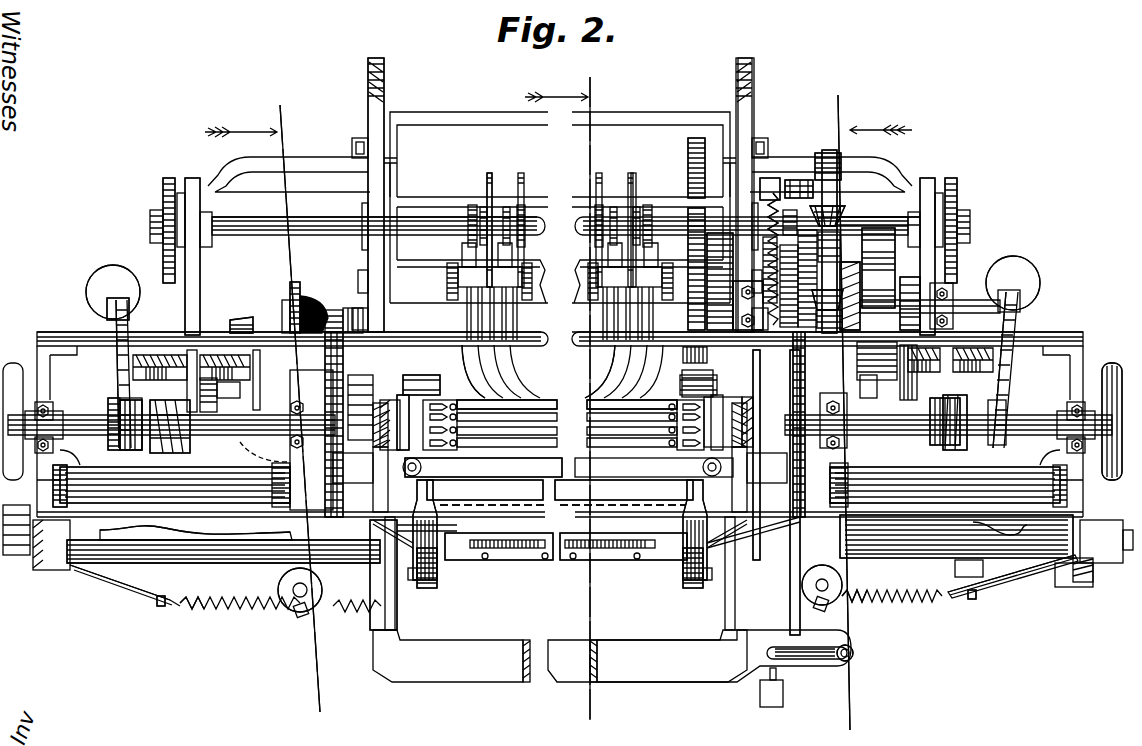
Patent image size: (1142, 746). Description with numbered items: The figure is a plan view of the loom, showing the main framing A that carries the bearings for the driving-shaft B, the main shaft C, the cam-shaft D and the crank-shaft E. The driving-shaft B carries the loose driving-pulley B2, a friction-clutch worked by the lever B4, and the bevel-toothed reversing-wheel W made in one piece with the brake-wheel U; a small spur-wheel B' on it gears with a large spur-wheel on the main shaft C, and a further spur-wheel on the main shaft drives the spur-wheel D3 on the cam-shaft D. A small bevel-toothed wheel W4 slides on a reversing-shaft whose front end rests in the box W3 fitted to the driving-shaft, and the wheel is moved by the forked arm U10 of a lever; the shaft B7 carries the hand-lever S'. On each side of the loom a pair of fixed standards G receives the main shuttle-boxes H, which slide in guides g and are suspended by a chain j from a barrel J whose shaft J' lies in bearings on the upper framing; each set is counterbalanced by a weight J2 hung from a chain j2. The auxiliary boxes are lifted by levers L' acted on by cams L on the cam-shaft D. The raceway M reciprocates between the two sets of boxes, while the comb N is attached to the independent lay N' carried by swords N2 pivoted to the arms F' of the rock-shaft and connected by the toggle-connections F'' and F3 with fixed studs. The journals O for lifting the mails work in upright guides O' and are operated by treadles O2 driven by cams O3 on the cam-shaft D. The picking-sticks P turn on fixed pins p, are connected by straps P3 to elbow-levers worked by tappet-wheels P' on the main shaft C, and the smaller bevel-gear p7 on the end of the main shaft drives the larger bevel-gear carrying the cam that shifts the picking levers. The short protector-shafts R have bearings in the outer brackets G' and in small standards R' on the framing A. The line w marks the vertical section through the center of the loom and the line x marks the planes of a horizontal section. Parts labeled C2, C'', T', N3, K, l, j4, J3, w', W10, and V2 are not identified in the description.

The main framing A is at (554, 195).
The cam-shaft D is at (566, 223).
The spur-wheel D3 is at (686, 168).
The cams O3 is at (561, 225).
The main shaft C is at (560, 322).
The gear C2 is at (687, 269).
The large gear C'' is at (720, 281).
The small spur-wheel B' is at (735, 305).
The treadles O2 is at (562, 371).
The journals O is at (512, 416).
The upright fixed guides O' is at (649, 414).
The crank-shaft E is at (483, 462).
The rail T' is at (560, 490).
The shuttle-raceway M is at (562, 494).
The comb N is at (499, 541).
The independent lay N' is at (603, 557).
The vibrating swords N2 is at (435, 568).
The gear N3 is at (685, 568).
The arms of the rock-shaft F' is at (698, 535).
The toggle-connection F'' is at (421, 536).
The toggle-connection F3 is at (421, 385).
The pin w' is at (423, 402).
The hand-lever S' is at (853, 650).
The shaft B7 is at (798, 492).
The straps P3 is at (525, 607).
The fixed pins p is at (567, 606).
The picking-sticks P is at (572, 577).
The brackets G' is at (573, 533).
The fixed standards G is at (562, 421).
The guides g is at (54, 508).
The main shuttle-boxes H is at (560, 480).
The rod K is at (570, 539).
The lever l is at (195, 525).
The barrels J is at (542, 417).
The barrel shafts J' is at (558, 424).
The chain j is at (526, 437).
The counterbalance weight J2 is at (563, 287).
The chain j4 is at (561, 362).
The chain j2 is at (554, 344).
The vertical gear J3 is at (554, 424).
The cams L is at (562, 221).
The levers L' is at (562, 256).
The tappet-wheels P' is at (293, 300).
The smaller bevel-gear p7 is at (241, 319).
The small standards R' is at (366, 575).
The protector-shafts R is at (783, 455).
The small bevel-toothed wheel W4 is at (837, 209).
The reversing-wheel W is at (829, 241).
The box W3 is at (827, 280).
The gear W10 is at (841, 170).
The forked arm U10 is at (800, 178).
The block V2 is at (796, 180).
The brake-wheel U is at (781, 243).
The loose driving-pulley B2 is at (878, 268).
The lever B4 is at (878, 295).
The driving-shaft B is at (922, 303).
The section line x is at (305, 409).
The section line w is at (597, 398).